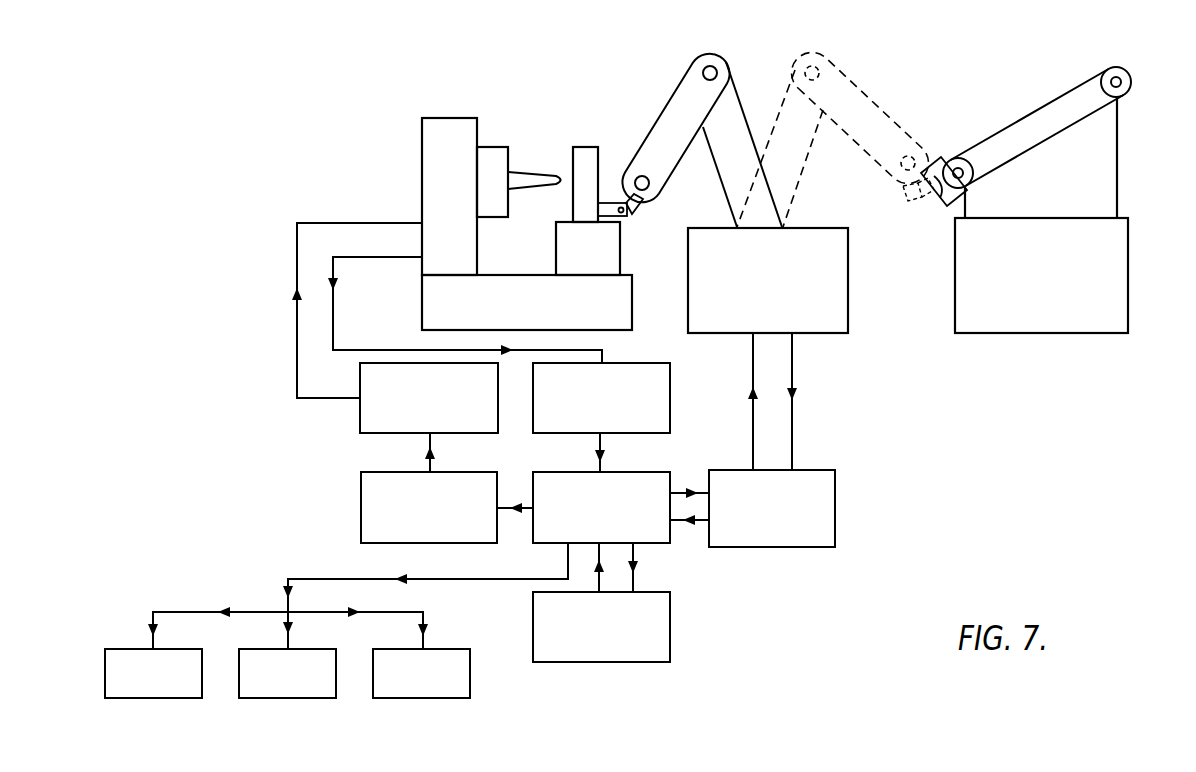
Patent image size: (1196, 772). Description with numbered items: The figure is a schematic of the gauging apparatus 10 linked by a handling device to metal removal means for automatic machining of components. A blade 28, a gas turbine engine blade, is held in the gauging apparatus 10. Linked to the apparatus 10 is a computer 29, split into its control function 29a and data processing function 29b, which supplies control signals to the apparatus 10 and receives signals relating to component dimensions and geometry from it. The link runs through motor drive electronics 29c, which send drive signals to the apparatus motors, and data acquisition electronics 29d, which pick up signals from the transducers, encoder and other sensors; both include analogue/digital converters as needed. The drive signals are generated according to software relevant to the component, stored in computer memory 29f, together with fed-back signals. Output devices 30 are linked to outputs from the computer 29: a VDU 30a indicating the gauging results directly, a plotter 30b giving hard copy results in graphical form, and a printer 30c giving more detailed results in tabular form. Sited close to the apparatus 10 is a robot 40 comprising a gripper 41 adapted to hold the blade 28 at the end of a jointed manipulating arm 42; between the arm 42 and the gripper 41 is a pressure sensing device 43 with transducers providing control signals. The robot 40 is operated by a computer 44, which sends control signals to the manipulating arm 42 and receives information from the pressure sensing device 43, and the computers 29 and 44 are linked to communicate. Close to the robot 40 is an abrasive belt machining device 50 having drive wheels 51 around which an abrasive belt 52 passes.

The gauging apparatus 10 is at (453, 85).
The component 28 is at (585, 145).
The computer 29 is at (531, 457).
The control function 29a is at (458, 543).
The data processing function 29b is at (642, 543).
The motor drive electronics 29c is at (460, 433).
The data acquisition electronics 29d is at (633, 433).
The computer memory 29f is at (635, 662).
The output devices 30 is at (300, 644).
The VDU 30a is at (178, 698).
The plotter 30b is at (310, 698).
The printer 30c is at (444, 698).
The robot 40 is at (762, 70).
The gripper 41 is at (618, 218).
The manipulating arm 42 is at (697, 73).
The pressure sensing device 43 is at (640, 203).
The computer 44 is at (758, 520).
The abrasive belt machining device 50 is at (1050, 176).
The drive wheels 51 is at (1130, 82).
The abrasive belt 52 is at (1011, 122).